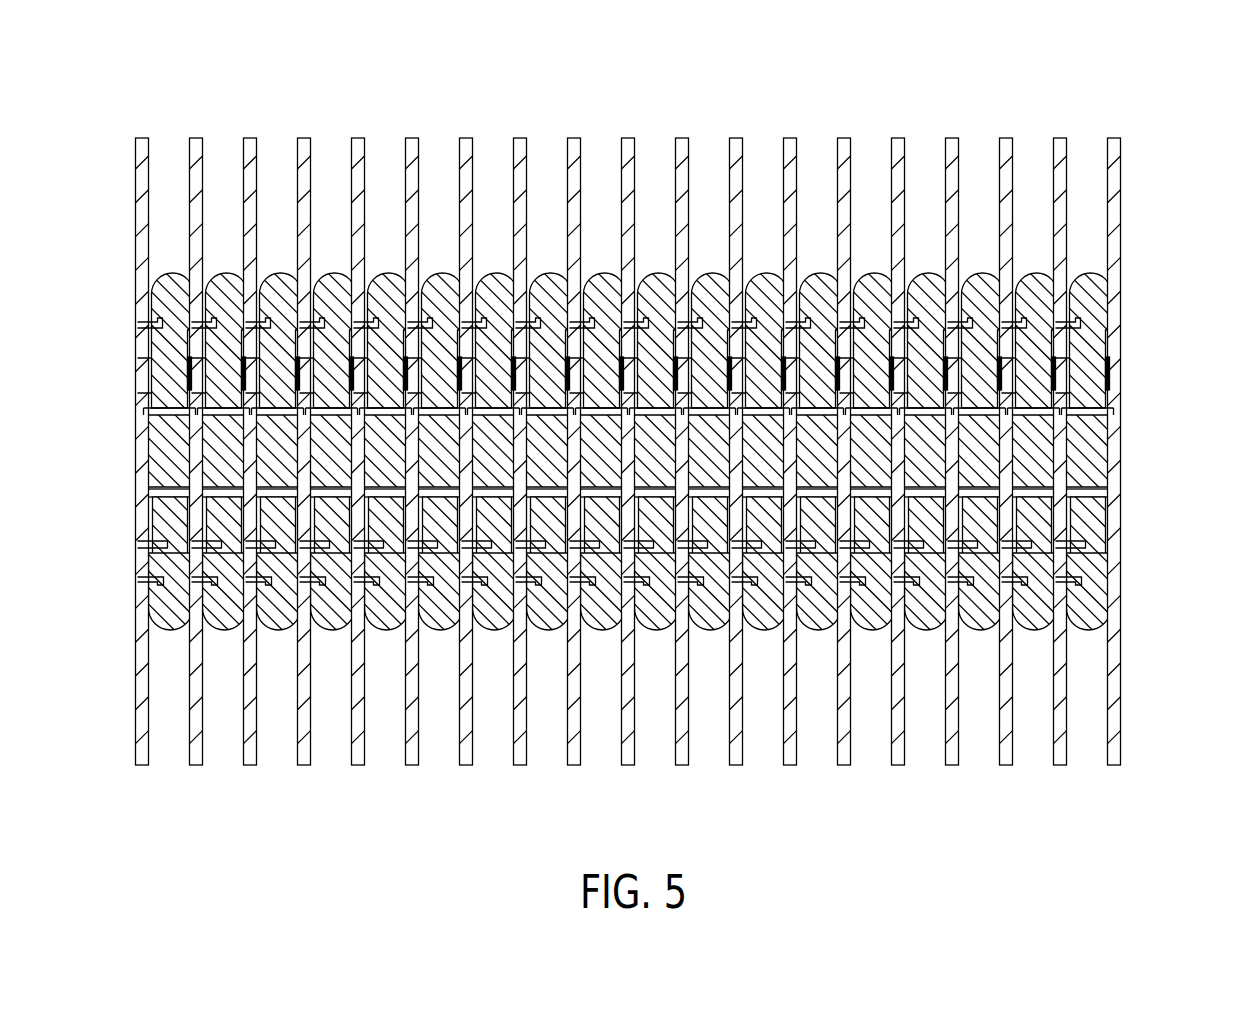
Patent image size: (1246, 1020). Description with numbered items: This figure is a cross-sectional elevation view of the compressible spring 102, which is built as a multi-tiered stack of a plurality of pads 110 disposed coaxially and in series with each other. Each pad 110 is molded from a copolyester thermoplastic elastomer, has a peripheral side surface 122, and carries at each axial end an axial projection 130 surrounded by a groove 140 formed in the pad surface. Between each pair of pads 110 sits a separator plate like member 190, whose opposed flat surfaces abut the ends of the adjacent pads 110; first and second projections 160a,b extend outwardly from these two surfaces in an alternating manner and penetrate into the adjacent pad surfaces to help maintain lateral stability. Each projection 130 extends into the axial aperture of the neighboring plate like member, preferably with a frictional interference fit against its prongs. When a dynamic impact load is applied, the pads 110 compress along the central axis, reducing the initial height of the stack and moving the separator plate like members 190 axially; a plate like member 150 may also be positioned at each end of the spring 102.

The spring 102 is at (1004, 57).
The pad 110 is at (652, 246).
The axial projection 130 is at (1047, 447).
The groove 140 is at (1107, 496).
The first and second projections 160a,b is at (1047, 578).
The peripheral side surface 122 is at (1107, 637).
The plate like member 150 is at (137, 758).
The separator plate like member 190 is at (682, 769).